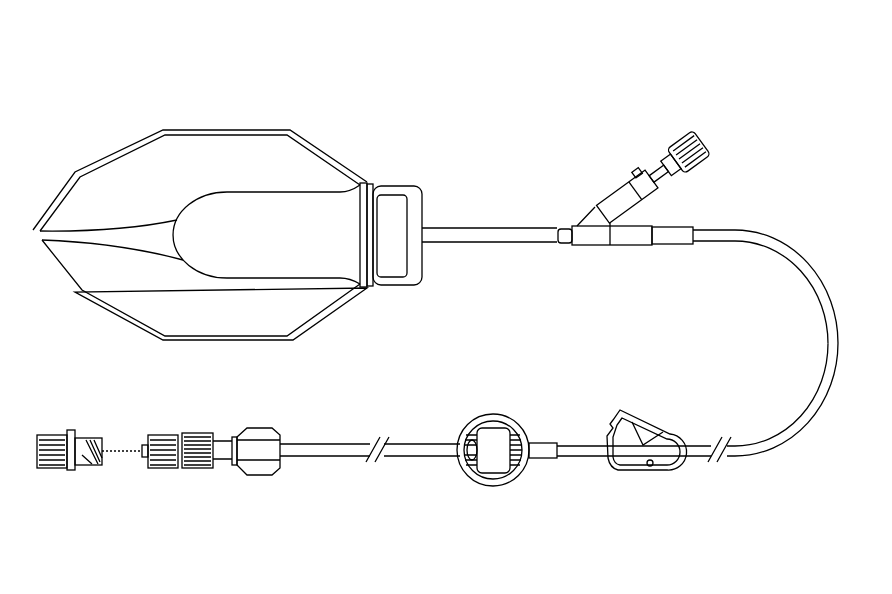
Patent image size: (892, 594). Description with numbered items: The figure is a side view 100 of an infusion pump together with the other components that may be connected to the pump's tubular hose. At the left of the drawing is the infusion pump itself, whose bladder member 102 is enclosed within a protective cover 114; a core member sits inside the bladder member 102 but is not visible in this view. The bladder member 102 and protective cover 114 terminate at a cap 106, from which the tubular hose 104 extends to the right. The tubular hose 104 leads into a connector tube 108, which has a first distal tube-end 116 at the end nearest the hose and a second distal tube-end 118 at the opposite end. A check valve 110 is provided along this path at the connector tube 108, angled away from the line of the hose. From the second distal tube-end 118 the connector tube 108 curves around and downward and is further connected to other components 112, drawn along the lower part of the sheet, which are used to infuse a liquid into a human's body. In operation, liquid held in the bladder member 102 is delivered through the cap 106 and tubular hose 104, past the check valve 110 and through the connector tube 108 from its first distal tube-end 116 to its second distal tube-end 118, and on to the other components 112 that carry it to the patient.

The side view 100 is at (172, 61).
The bladder member 102 is at (248, 188).
The tubular hose 104 is at (487, 228).
The cap 106 is at (410, 287).
The connector tube 108 is at (688, 226).
The check valve 110 is at (637, 175).
The other components 112 is at (768, 452).
The protective cover 114 is at (110, 310).
The first distal tube-end 116 is at (567, 246).
The second distal tube-end 118 is at (672, 245).